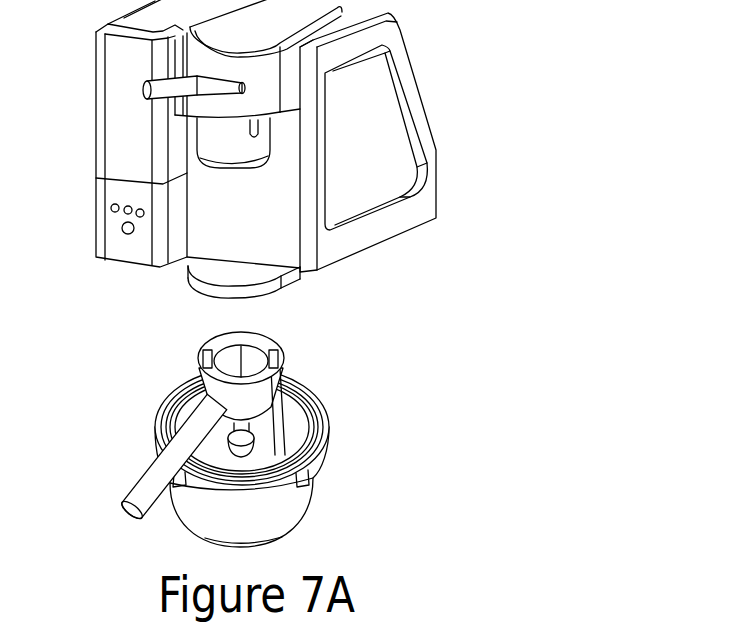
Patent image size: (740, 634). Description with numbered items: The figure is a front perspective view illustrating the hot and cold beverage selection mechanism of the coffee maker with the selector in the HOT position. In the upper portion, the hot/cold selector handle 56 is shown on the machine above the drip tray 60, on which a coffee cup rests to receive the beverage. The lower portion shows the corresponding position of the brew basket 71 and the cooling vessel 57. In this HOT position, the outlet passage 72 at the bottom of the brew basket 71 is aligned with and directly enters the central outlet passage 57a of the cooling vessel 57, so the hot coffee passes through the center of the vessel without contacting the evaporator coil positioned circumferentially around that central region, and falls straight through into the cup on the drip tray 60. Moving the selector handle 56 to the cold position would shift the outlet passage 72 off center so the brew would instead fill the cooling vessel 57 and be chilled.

The hot/cold selector handle 56 is at (162, 79).
The drip tray 60 is at (230, 278).
The brew basket 71 is at (290, 403).
The outlet passage 72 is at (293, 420).
The central outlet passage 57a is at (258, 437).
The cooling vessel 57 is at (260, 508).